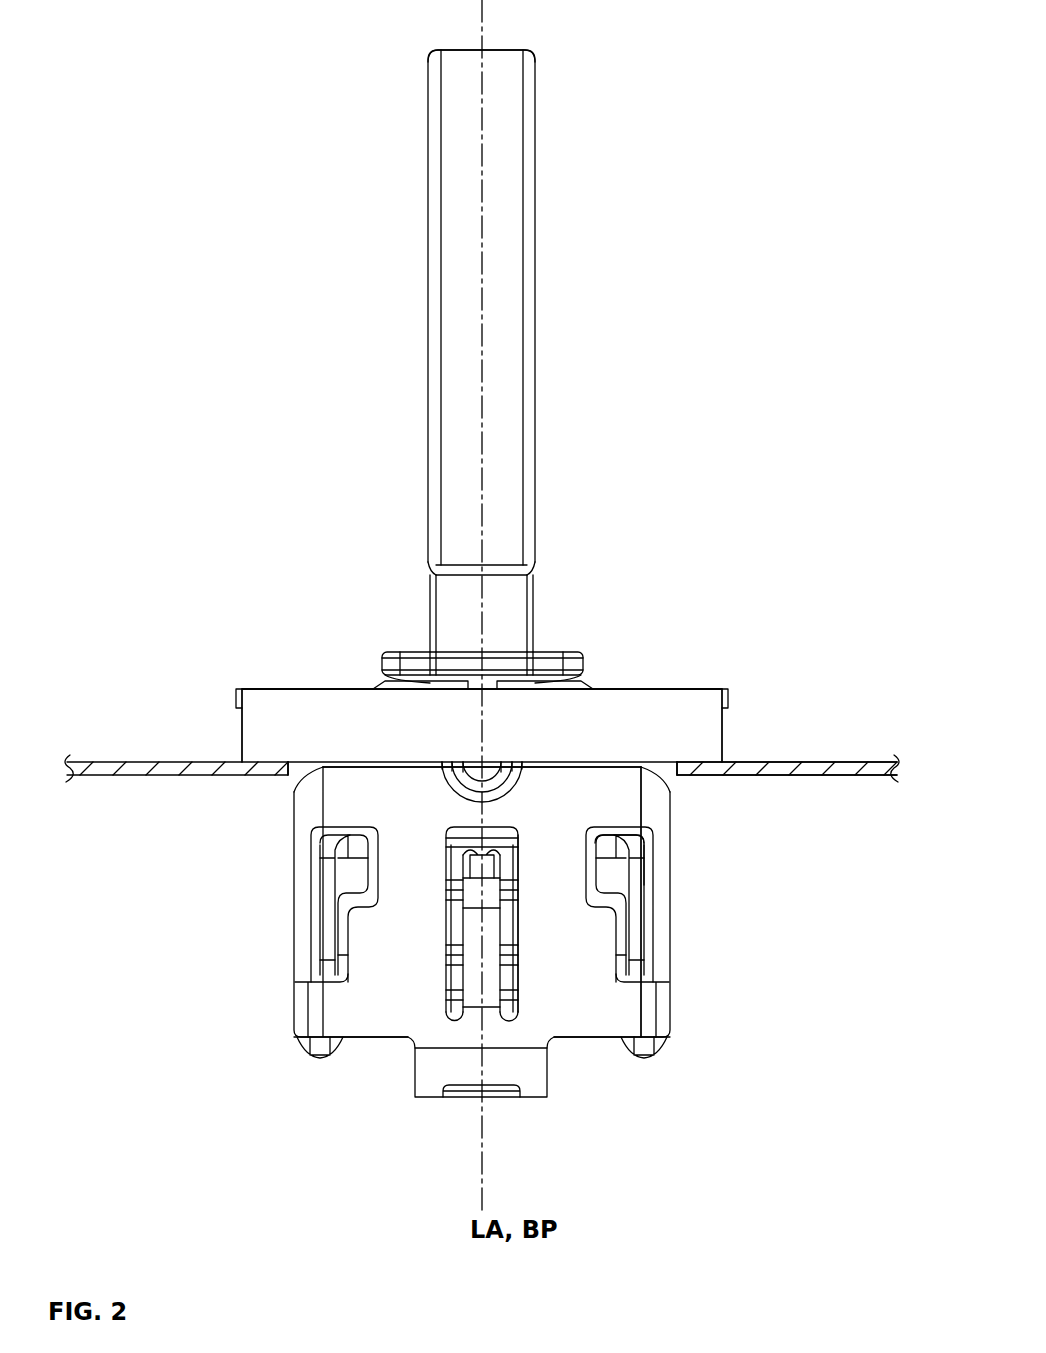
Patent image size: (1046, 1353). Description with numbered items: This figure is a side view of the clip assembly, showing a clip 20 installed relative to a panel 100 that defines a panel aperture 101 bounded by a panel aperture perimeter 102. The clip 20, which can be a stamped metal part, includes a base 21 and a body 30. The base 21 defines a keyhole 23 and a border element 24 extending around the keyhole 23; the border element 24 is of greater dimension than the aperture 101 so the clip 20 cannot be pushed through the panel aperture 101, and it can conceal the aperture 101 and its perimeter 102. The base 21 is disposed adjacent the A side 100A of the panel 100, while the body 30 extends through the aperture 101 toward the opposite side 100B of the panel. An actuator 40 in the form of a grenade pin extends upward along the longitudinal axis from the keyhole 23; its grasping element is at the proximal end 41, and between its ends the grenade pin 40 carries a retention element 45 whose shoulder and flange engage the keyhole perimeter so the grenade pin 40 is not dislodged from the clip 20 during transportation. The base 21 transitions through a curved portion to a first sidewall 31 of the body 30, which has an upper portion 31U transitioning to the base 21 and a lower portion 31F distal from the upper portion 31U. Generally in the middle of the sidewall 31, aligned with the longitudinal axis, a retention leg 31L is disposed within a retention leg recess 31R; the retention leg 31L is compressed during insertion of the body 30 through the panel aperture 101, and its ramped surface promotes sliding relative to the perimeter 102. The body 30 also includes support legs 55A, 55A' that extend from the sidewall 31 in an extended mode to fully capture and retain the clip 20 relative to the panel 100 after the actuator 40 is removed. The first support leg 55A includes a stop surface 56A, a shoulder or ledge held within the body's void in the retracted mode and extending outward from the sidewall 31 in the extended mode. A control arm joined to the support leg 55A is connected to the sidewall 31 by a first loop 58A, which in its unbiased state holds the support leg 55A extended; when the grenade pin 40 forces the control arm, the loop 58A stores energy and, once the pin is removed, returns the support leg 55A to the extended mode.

The clip 20 is at (222, 735).
The base 21 is at (712, 689).
The keyhole 23 is at (594, 688).
The border element 24 is at (302, 689).
The body 30 is at (470, 934).
The first sidewall 31 is at (620, 1012).
The upper portion 31U is at (620, 782).
The retention leg recess 31R is at (507, 840).
The retention leg 31L is at (490, 968).
The lower portion 31F is at (612, 1038).
The actuator 40 is at (548, 288).
The proximal end 41 is at (560, 48).
The retention element 45 is at (592, 664).
The first support leg 55A is at (691, 932).
The support leg 55A' is at (259, 932).
The stop surface 56A is at (617, 838).
The first loop 58A is at (540, 1095).
The panel 100 is at (872, 758).
The A side 100A is at (828, 758).
The panel lower surface 100B is at (862, 780).
The panel aperture 101 is at (672, 775).
The panel aperture perimeter 102 is at (660, 768).